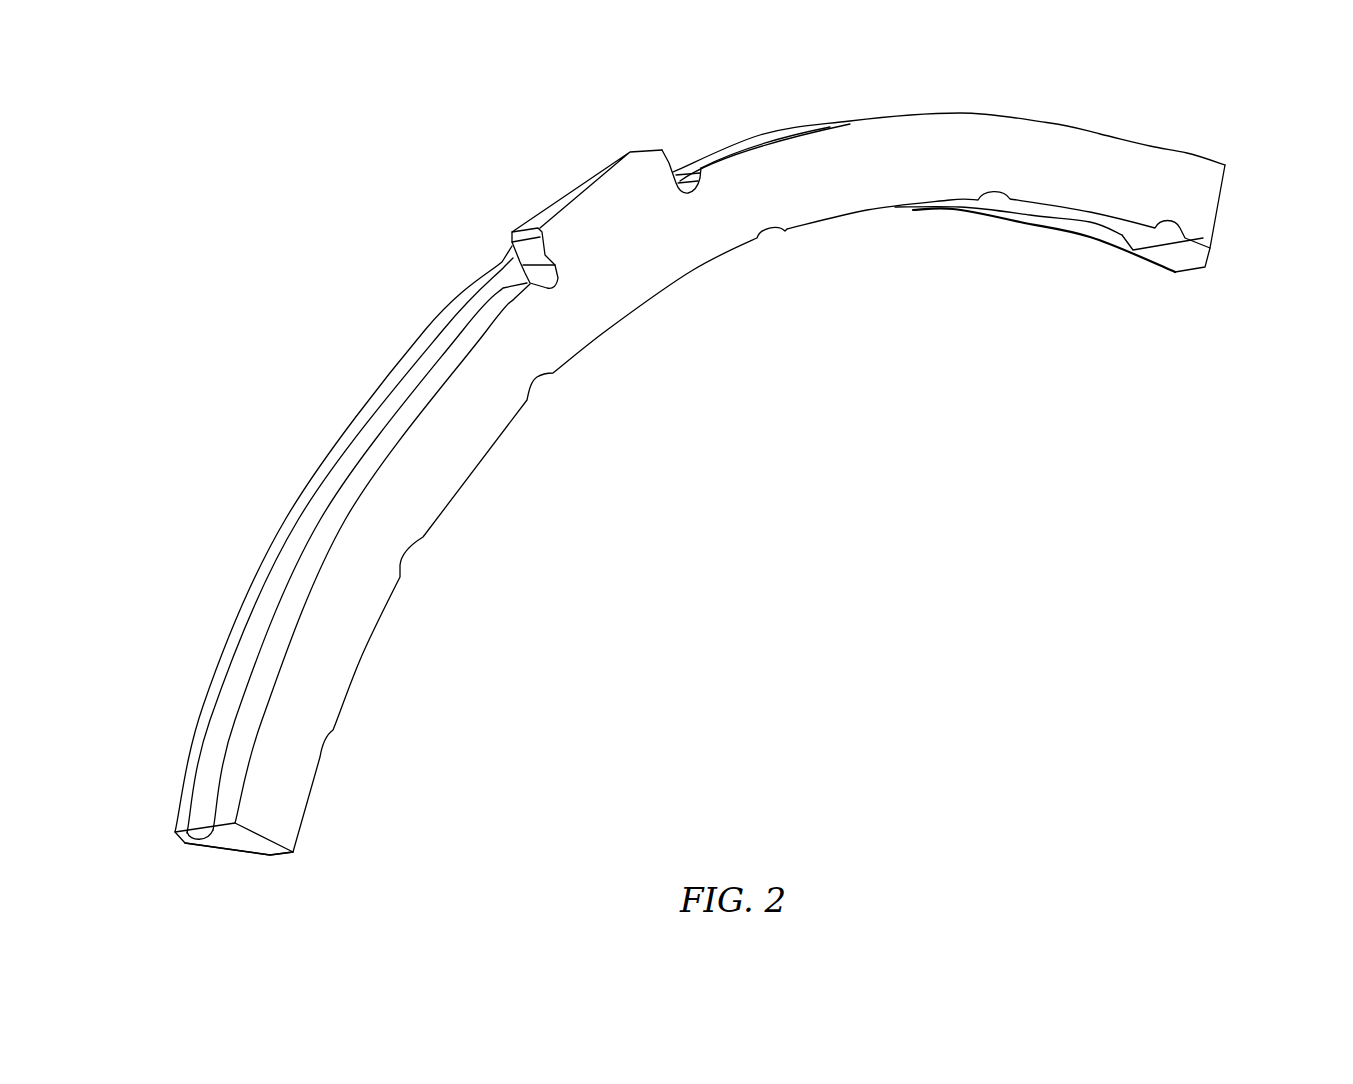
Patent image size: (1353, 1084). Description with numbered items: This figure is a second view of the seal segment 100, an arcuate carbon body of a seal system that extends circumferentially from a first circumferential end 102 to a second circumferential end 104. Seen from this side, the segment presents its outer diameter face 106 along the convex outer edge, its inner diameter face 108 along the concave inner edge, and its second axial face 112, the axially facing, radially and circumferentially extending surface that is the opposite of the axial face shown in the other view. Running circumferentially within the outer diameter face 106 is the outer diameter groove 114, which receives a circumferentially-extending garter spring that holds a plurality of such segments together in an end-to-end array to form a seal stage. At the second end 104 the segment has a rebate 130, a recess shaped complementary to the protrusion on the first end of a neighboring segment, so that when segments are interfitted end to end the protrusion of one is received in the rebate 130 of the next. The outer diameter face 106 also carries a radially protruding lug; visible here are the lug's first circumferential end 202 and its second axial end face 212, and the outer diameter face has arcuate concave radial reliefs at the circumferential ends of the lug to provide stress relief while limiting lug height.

The seal segment 100 is at (470, 117).
The first circumferential end 102 is at (1238, 234).
The second circumferential end 104 is at (221, 888).
The outer diameter face 106 is at (377, 450).
The inner diameter face 108 is at (1057, 217).
The second axial face 112 is at (850, 162).
The outer diameter groove 114 is at (198, 781).
The rebate 130 is at (246, 864).
The first circumferential end of lug 202 is at (530, 252).
The second axial end face of lug 212 is at (595, 207).